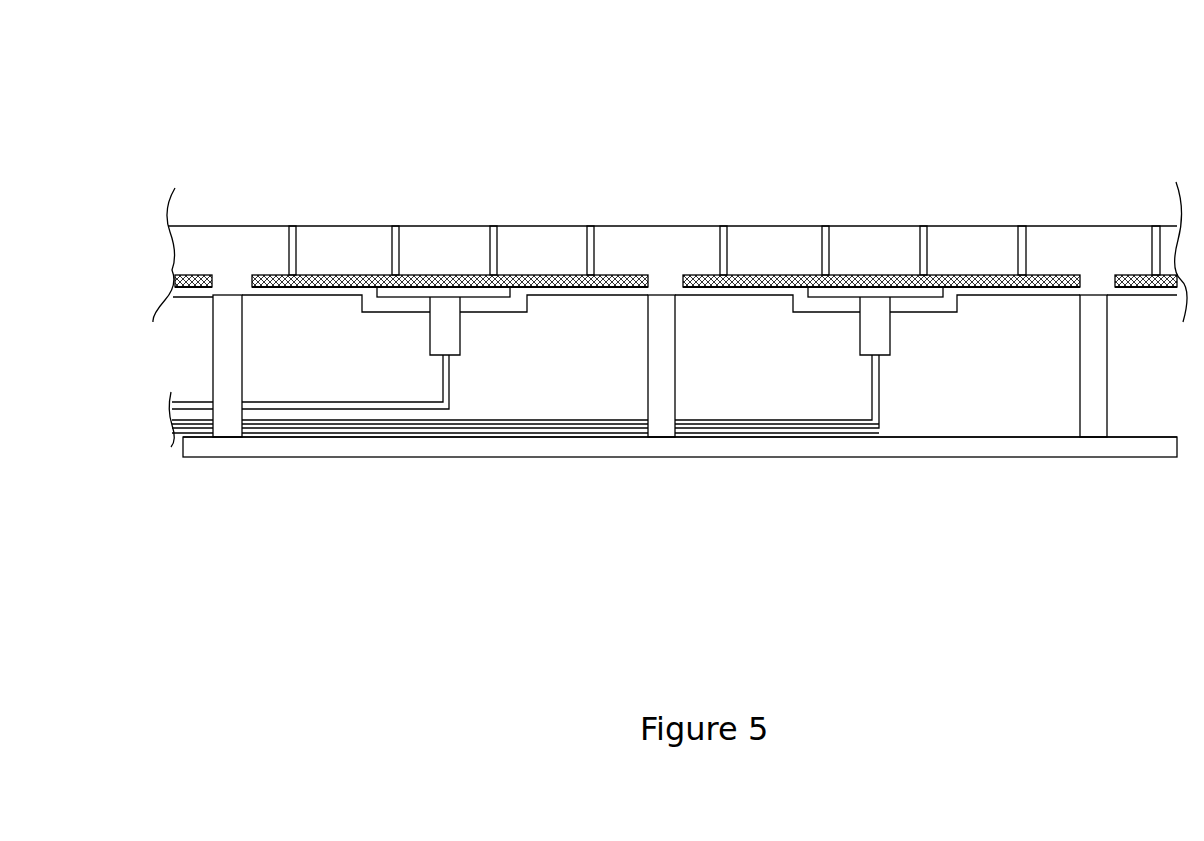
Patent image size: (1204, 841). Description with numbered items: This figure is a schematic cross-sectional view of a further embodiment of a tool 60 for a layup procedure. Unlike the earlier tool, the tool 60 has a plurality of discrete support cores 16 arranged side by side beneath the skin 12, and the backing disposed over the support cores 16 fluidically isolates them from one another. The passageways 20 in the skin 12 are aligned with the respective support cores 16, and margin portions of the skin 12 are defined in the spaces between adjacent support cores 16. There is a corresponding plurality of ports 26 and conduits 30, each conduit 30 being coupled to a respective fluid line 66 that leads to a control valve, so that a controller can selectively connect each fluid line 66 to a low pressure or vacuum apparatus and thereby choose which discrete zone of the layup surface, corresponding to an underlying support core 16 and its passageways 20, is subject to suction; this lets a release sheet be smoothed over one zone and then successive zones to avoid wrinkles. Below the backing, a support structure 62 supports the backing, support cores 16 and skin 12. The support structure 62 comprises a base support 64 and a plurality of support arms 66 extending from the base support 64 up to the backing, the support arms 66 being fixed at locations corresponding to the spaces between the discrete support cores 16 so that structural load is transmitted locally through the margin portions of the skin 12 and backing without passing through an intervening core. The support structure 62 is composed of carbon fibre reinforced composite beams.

The tool 60 is at (1072, 59).
The skin 12 is at (681, 238).
The passageways 20 is at (399, 240).
The ports 26 is at (187, 299).
The support cores 16 is at (528, 290).
The conduits 30 is at (447, 335).
The fluid lines / support arms 66 is at (660, 366).
The base support 64 is at (535, 443).
The support structure 62 is at (777, 448).